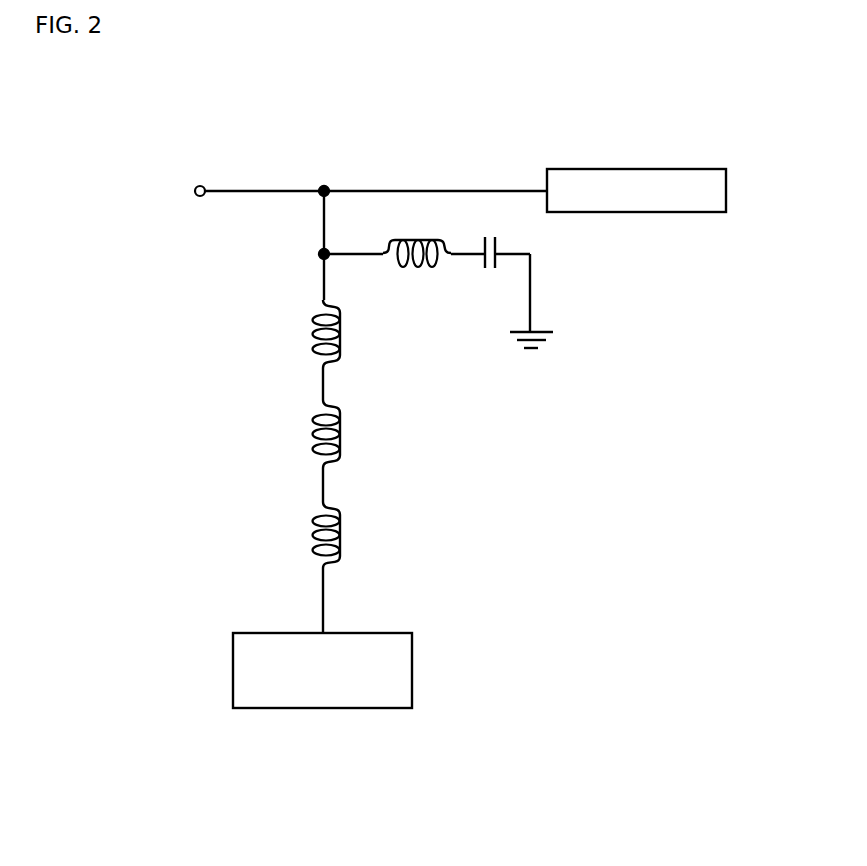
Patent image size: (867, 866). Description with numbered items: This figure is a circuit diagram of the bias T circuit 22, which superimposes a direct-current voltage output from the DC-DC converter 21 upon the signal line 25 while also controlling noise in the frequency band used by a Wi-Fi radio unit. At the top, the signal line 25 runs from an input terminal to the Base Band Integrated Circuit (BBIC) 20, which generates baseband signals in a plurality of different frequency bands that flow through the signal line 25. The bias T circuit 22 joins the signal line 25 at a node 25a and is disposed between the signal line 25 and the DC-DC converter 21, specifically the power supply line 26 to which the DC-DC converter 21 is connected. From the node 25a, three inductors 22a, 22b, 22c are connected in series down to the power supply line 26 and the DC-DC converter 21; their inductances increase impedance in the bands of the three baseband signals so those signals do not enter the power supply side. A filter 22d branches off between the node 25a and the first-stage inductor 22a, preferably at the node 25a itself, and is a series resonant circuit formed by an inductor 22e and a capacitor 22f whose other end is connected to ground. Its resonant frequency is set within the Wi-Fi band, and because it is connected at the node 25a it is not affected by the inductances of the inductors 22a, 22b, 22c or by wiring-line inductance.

The Base Band Integrated Circuit (BBIC) 20 is at (695, 169).
The DC-DC converter 21 is at (385, 633).
The bias T circuit 22 is at (244, 282).
The inductor 22a is at (341, 322).
The inductor 22b is at (341, 425).
The inductor 22c is at (341, 523).
The filter 22d is at (448, 288).
The inductor 22e is at (410, 239).
The capacitor 22f is at (498, 238).
The signal line 25 is at (483, 191).
The node 25a is at (329, 185).
The power supply line 26 is at (322, 591).